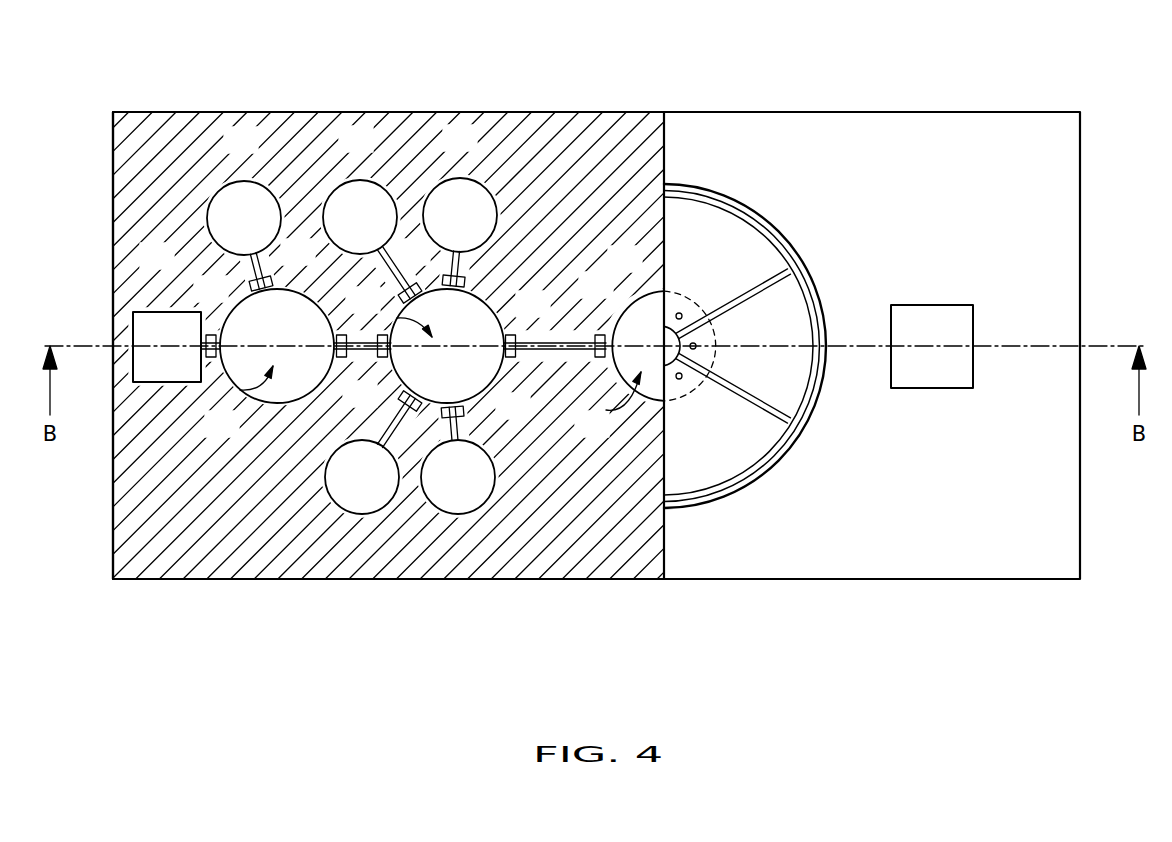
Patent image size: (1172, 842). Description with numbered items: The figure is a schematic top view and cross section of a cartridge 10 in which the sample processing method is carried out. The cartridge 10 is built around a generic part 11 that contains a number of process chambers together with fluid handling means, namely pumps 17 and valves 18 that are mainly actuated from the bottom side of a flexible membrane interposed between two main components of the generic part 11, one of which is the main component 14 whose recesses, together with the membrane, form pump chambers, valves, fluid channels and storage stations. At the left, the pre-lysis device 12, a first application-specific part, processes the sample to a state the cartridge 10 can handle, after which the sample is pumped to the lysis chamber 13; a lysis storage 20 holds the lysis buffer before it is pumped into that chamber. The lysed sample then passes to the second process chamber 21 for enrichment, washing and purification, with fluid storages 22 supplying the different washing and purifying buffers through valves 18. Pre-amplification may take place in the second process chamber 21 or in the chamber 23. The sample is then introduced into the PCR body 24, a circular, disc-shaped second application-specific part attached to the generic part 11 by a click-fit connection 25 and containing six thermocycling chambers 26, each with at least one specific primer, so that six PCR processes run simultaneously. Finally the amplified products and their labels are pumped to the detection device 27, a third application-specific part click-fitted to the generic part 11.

The cartridge 10 is at (563, 598).
The generic part 11 is at (87, 598).
The pre-lysis device 12 is at (160, 312).
The lysis chamber 13 is at (290, 302).
The main component 14 is at (570, 137).
The pumps 17 is at (241, 390).
The valves 18 is at (252, 284).
The lysis storage 20 is at (246, 195).
The second process chamber 21 is at (480, 310).
The fluid storages 22 is at (361, 195).
The chamber 23 is at (630, 314).
The PCR body 24 is at (793, 271).
The click-fit connection 25 is at (688, 344).
The thermocycling chambers 26 is at (730, 230).
The detection device 27 is at (930, 305).